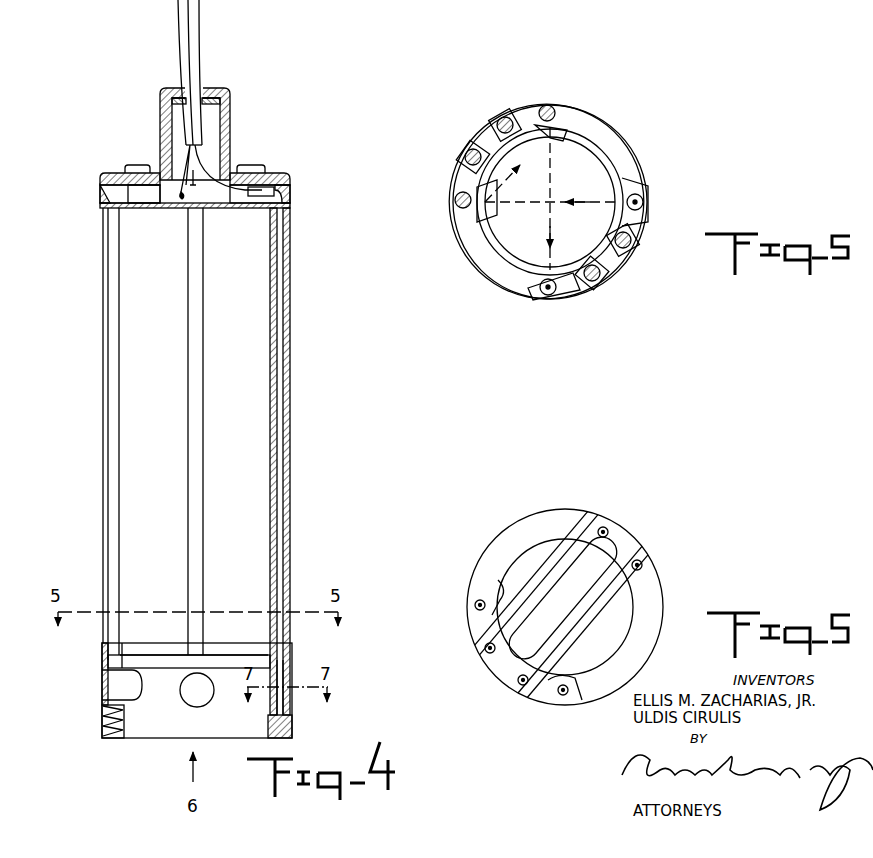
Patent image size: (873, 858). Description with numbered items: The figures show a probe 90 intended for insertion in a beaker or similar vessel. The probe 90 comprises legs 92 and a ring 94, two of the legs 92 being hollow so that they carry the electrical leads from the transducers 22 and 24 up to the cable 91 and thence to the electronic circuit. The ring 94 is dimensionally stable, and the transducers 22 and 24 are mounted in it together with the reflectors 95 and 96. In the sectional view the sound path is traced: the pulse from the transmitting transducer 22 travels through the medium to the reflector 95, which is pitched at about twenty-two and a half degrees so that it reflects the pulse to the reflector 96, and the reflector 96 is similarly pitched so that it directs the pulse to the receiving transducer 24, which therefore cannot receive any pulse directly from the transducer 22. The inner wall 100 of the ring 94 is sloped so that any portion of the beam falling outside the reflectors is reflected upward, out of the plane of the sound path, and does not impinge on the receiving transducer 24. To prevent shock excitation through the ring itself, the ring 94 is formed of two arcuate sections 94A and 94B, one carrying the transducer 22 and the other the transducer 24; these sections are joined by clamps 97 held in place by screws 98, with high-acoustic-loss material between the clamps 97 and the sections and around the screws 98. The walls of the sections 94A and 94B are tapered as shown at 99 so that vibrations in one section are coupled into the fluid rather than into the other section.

In FIG. 4, the transducer 22 is at (288, 710).
In FIG. 5, the transducer 22 is at (632, 185).
In FIG. 5, the receiving transducer 24 is at (528, 292).
In FIG. 4, the probe 90 is at (298, 262).
In FIG. 4, the cable 91 is at (201, 38).
In FIG. 4, the legs 92 is at (103, 268).
In FIG. 4, the ring 94 is at (182, 722).
In FIG. 5, the ring 94 is at (572, 100).
In FIG. 5, the arcuate section 94A is at (623, 150).
In FIG. 6, the arcuate section 94A is at (640, 640).
In FIG. 5, the arcuate section 94B is at (486, 256).
In FIG. 6, the arcuate section 94B is at (552, 518).
In FIG. 4, the reflector 95 is at (133, 694).
In FIG. 5, the reflector 95 is at (484, 212).
In FIG. 6, the reflector 95 is at (500, 580).
In FIG. 4, the reflector 96 is at (192, 697).
In FIG. 5, the reflector 96 is at (560, 140).
In FIG. 6, the reflector 96 is at (575, 700).
In FIG. 6, the clamps 97 is at (568, 560).
In FIG. 5, the screws 98 is at (628, 248).
In FIG. 5, the tapered walls 99 is at (480, 140).
In FIG. 6, the tapered walls 99 is at (630, 545).
In FIG. 4, the inner wall 100 is at (128, 668).